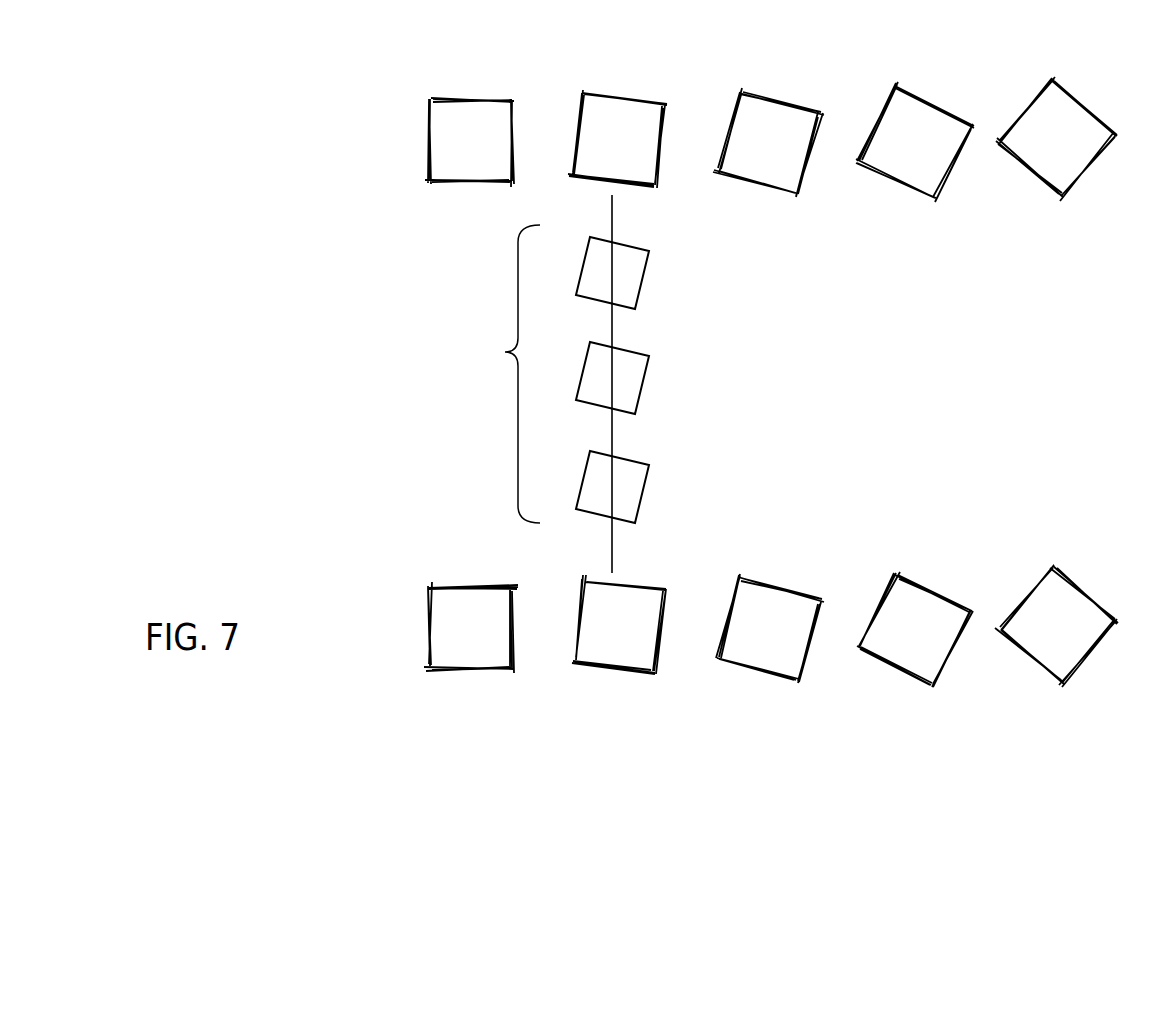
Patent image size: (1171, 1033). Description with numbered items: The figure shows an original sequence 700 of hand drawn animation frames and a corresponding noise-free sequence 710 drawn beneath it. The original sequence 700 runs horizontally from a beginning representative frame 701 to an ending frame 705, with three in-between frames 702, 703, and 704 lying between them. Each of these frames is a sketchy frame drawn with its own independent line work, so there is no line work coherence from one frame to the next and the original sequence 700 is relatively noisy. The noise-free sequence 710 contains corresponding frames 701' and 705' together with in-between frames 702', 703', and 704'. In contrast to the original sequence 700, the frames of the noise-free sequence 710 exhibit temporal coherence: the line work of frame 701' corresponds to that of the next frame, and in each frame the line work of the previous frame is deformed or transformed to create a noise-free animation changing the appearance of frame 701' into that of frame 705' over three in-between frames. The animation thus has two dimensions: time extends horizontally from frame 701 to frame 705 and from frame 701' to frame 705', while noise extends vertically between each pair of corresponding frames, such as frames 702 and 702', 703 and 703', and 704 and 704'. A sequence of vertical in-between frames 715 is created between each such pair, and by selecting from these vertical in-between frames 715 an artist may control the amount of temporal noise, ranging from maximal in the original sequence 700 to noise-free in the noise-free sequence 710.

The original sequence 700 is at (878, 358).
The beginning representative frame 701 is at (476, 124).
The in-between frame of original sequence 702 is at (632, 125).
The in-between frame of original sequence 703 is at (774, 130).
The in-between frame of original sequence 704 is at (933, 140).
The ending frame 705 is at (1064, 128).
The noise-free sequence 710 is at (978, 838).
The noise-free frame corresponding to beginning frame 701' is at (485, 648).
The noise-free in-between frame 702' is at (629, 645).
The noise-free in-between frame 703' is at (779, 648).
The noise-free in-between frame 704' is at (928, 652).
The noise-free frame corresponding to ending frame 705' is at (1072, 642).
The vertical in-between frames 715 is at (506, 352).